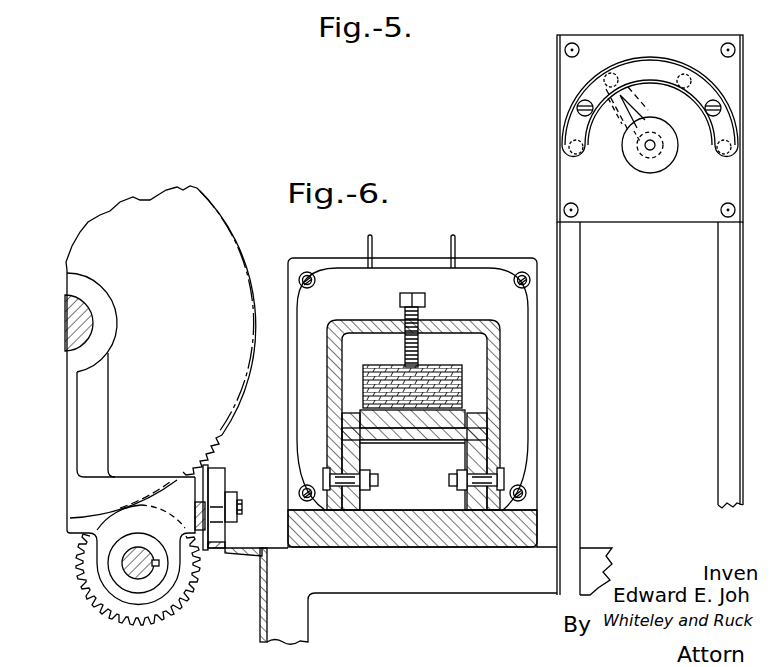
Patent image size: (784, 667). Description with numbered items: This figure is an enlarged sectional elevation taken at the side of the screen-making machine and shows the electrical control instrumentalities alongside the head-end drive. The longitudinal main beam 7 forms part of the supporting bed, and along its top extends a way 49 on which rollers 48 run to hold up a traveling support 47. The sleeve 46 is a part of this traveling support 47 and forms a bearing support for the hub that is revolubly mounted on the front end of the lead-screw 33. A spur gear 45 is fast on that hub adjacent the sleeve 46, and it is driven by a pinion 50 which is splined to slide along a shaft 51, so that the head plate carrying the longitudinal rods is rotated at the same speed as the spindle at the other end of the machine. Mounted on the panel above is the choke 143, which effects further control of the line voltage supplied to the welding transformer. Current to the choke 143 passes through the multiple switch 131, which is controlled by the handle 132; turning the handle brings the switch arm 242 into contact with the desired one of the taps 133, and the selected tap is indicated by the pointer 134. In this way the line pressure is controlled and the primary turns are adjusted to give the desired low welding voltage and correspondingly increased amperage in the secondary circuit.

In FIG. 6, the longitudinal main beam 7 is at (260, 638).
In FIG. 6, the lead-screw 33 is at (92, 322).
In FIG. 6, the spur gear 45 is at (236, 247).
In FIG. 6, the sleeve 46 is at (107, 343).
In FIG. 6, the traveling support 47 is at (105, 415).
In FIG. 6, the roller 48 is at (218, 477).
In FIG. 6, the way 49 is at (212, 552).
In FIG. 6, the pinion 50 is at (176, 603).
In FIG. 6, the shaft 51 is at (136, 566).
In FIG. 5, the multiple switch 131 is at (702, 29).
In FIG. 5, the handle 132 is at (660, 163).
In FIG. 5, the taps 133 is at (684, 74).
In FIG. 5, the pointer 134 is at (620, 100).
In FIG. 6, the choke 143 is at (485, 282).
In FIG. 5, the switch arm 242 is at (637, 102).